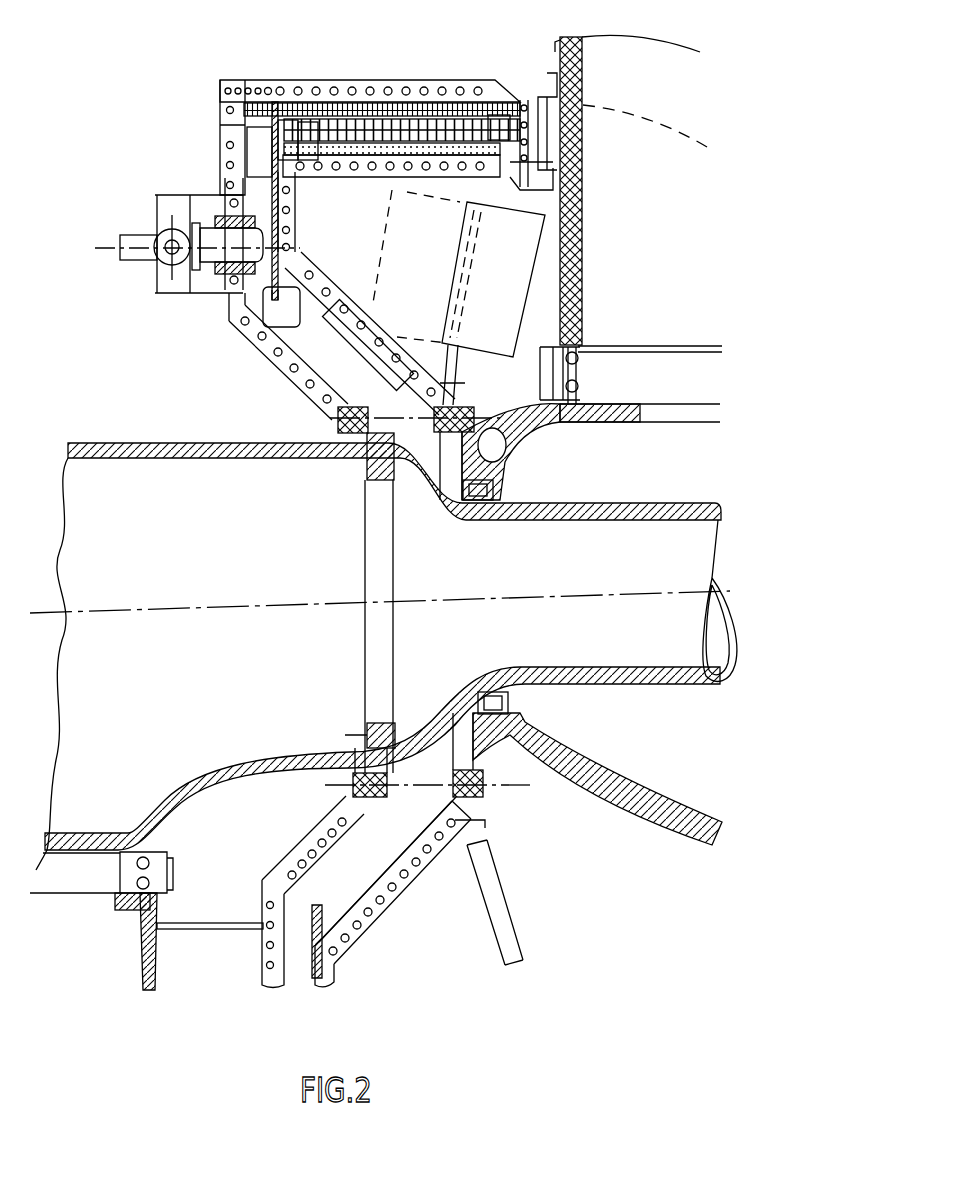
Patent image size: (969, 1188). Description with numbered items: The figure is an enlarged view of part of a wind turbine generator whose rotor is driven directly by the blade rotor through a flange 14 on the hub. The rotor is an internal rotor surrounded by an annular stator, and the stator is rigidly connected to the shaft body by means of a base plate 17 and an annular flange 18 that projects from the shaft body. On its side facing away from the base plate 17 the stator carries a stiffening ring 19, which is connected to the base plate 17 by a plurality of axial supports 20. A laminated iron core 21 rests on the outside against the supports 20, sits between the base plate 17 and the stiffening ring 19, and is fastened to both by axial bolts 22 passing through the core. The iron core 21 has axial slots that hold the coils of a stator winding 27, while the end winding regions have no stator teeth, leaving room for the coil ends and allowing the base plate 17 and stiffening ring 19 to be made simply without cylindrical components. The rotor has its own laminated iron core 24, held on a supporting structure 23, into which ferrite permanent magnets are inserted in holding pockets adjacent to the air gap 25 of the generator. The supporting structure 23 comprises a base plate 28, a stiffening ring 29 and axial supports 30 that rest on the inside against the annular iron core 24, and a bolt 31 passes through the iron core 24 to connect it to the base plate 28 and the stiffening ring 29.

The flange 14 is at (510, 440).
The base plate 17 is at (250, 322).
The annular flange 18 is at (338, 420).
The stiffening ring 19 is at (523, 132).
The axial supports 20 is at (366, 82).
The laminated iron core 21 is at (430, 120).
The axial bolts 22 is at (288, 105).
The supporting structure 23 is at (347, 282).
The laminated iron core 24 is at (397, 193).
The air gap 25 is at (267, 92).
The stator winding 27 is at (240, 130).
The base plate 28 is at (370, 910).
The stiffening ring 29 is at (492, 165).
The axial supports 30 is at (318, 173).
The bolt 31 is at (242, 164).